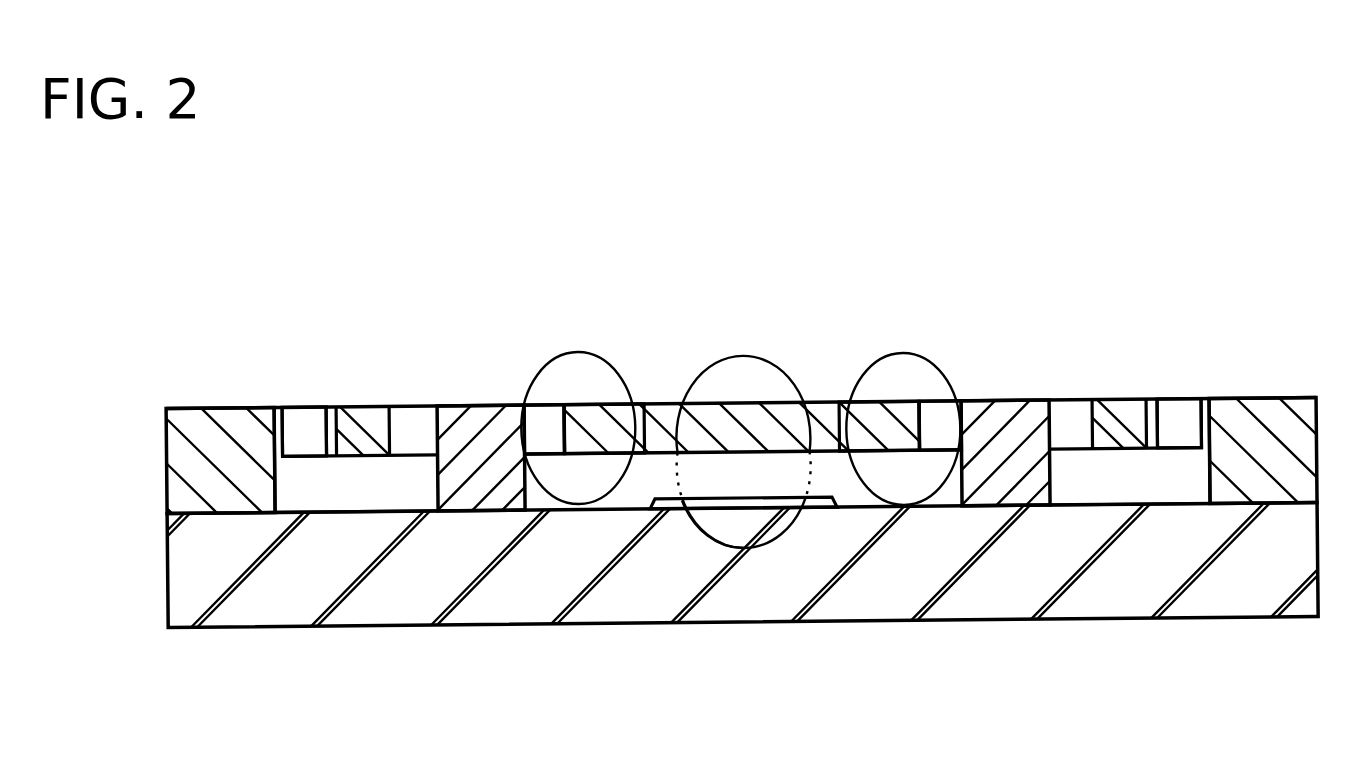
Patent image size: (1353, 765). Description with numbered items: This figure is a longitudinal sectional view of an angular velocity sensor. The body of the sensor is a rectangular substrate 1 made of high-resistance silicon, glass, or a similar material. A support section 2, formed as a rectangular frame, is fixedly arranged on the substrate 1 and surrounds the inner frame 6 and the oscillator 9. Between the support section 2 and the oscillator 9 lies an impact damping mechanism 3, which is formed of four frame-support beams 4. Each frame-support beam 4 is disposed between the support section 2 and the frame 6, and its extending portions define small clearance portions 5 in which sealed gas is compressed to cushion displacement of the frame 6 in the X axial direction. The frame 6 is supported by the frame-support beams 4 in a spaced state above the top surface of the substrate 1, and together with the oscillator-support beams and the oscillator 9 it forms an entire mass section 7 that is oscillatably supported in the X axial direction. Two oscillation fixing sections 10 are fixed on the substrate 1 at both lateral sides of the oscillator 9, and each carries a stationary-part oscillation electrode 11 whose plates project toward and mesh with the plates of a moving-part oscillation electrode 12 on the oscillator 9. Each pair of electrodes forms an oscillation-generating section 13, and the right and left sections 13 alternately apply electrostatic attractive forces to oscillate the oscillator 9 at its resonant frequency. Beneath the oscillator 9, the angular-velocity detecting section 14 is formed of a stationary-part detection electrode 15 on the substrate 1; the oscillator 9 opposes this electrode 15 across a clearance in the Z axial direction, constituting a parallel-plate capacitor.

The substrate 1 is at (268, 607).
The support section 2 is at (189, 406).
The impact damping mechanism 3 is at (387, 398).
The frame-support beam 4 is at (312, 410).
The clearance portion 5 is at (278, 406).
The frame 6 is at (360, 406).
The entire mass section 7 is at (800, 394).
The oscillator 9 is at (735, 406).
The oscillation fixing section 10 is at (465, 404).
The stationary-part oscillation electrode 11 is at (533, 404).
The moving-part oscillation electrode 12 is at (600, 404).
The oscillation-generating section 13 is at (575, 346).
The angular-velocity detecting section 14 is at (792, 540).
The stationary-part detection electrode 15 is at (707, 507).